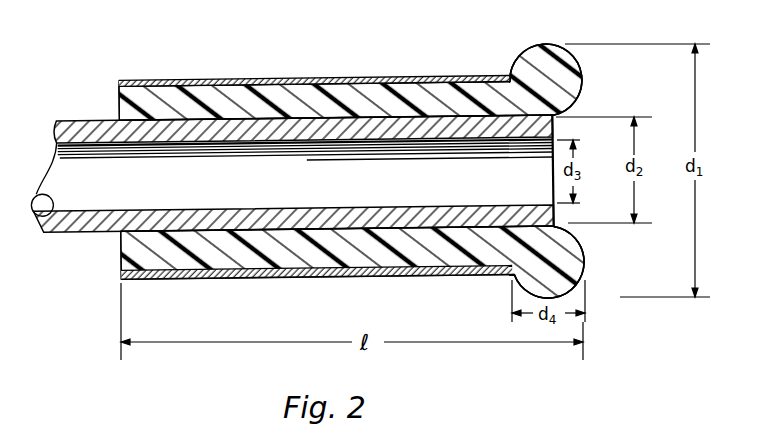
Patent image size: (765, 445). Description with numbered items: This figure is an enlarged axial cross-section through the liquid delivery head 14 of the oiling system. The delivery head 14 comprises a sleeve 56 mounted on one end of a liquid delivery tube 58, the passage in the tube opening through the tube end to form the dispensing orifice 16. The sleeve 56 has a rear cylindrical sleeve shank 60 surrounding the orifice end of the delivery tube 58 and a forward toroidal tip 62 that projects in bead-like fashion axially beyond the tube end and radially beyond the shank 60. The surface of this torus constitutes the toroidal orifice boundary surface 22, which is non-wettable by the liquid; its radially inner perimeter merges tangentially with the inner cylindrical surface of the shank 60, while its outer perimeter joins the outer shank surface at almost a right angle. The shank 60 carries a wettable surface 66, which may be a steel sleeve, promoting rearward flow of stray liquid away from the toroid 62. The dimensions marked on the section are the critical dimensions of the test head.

The liquid delivery head 14 is at (314, 68).
The dispensing orifice 16 is at (33, 200).
The toroidal orifice boundary surface 22 is at (585, 78).
The sleeve 56 is at (110, 92).
The liquid delivery tube 58 is at (55, 131).
The sleeve shank 60 is at (120, 249).
The toroidal tip 62 is at (547, 44).
The wettable shank surface 66 is at (120, 272).